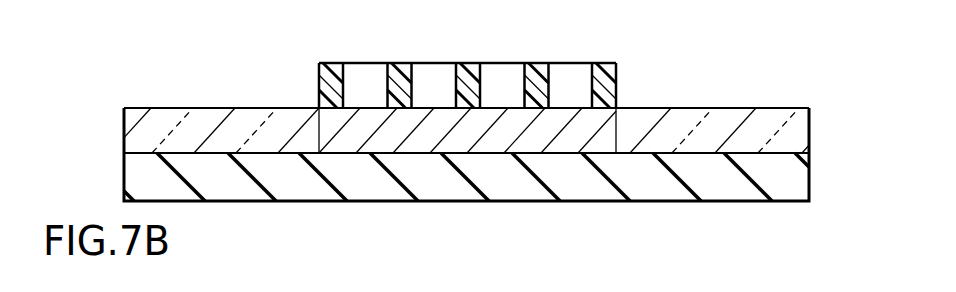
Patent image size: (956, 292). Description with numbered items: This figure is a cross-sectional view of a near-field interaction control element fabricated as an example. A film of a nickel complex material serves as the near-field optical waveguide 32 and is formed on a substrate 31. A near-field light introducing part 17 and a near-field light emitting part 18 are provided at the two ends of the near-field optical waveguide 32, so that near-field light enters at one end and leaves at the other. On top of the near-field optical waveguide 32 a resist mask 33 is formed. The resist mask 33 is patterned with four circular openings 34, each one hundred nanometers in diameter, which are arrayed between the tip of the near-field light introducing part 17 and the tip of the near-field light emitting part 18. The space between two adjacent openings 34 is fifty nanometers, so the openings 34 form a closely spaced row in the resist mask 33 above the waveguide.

The near-field light introducing part 17 is at (177, 118).
The near-field light emitting part 18 is at (757, 118).
The substrate 31 is at (702, 190).
The near-field optical waveguide 32 is at (500, 143).
The resist mask 33 is at (537, 70).
The circular openings 34 is at (435, 72).